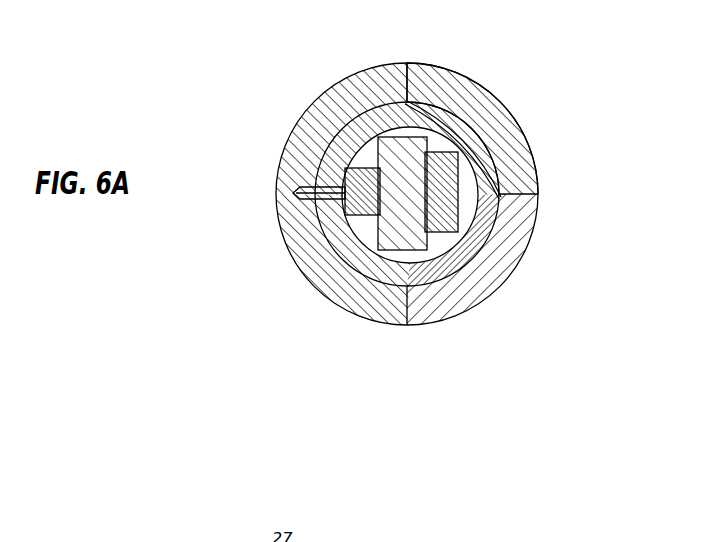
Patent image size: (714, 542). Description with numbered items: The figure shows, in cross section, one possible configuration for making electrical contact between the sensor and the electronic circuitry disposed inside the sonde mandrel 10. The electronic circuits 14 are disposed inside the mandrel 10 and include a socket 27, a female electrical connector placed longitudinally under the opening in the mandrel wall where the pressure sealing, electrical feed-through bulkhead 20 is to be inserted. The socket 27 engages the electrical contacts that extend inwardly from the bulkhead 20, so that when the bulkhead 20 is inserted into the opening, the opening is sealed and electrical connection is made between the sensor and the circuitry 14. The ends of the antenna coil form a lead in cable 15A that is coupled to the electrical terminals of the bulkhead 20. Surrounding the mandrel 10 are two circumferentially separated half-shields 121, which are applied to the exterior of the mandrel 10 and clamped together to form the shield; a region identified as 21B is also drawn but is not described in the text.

The mandrel 10 is at (472, 189).
The electronic circuits 14 is at (492, 96).
The lead in cable 15A is at (281, 200).
The bulkhead 20 is at (290, 236).
The outer layer 21B is at (530, 141).
The socket 27 is at (365, 160).
The half-shields 121 is at (317, 122).